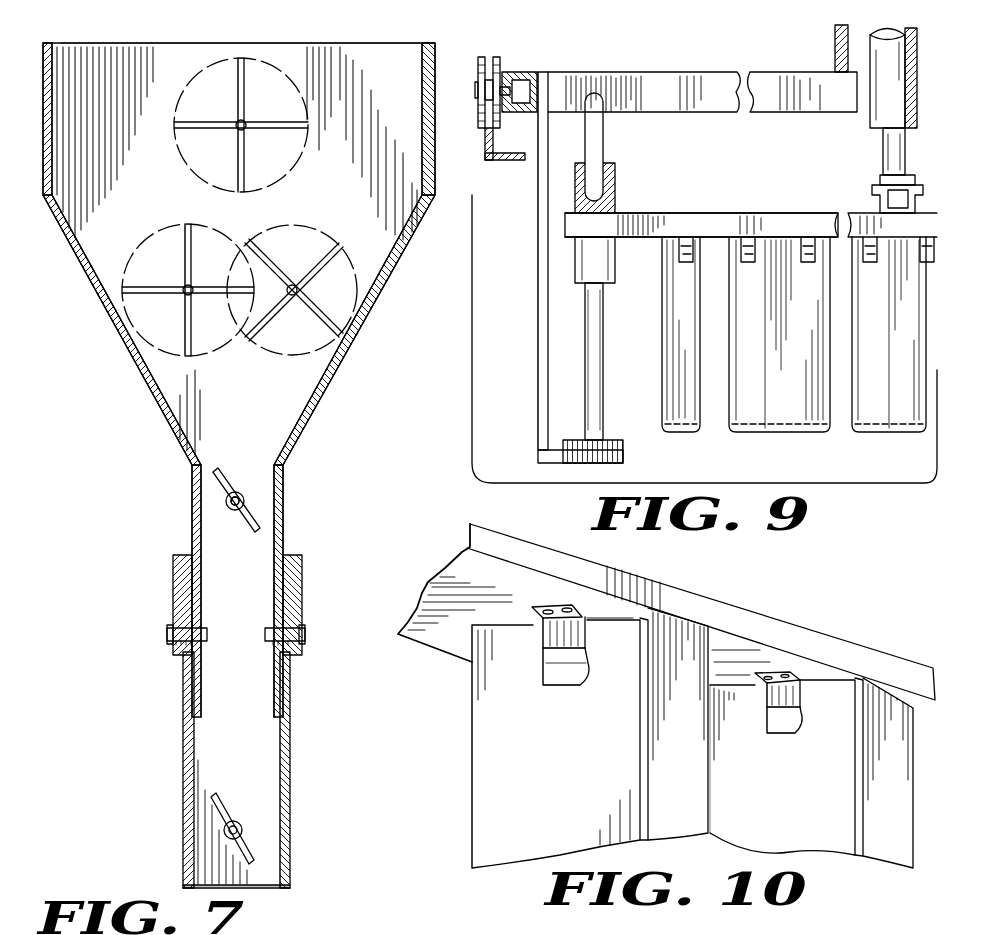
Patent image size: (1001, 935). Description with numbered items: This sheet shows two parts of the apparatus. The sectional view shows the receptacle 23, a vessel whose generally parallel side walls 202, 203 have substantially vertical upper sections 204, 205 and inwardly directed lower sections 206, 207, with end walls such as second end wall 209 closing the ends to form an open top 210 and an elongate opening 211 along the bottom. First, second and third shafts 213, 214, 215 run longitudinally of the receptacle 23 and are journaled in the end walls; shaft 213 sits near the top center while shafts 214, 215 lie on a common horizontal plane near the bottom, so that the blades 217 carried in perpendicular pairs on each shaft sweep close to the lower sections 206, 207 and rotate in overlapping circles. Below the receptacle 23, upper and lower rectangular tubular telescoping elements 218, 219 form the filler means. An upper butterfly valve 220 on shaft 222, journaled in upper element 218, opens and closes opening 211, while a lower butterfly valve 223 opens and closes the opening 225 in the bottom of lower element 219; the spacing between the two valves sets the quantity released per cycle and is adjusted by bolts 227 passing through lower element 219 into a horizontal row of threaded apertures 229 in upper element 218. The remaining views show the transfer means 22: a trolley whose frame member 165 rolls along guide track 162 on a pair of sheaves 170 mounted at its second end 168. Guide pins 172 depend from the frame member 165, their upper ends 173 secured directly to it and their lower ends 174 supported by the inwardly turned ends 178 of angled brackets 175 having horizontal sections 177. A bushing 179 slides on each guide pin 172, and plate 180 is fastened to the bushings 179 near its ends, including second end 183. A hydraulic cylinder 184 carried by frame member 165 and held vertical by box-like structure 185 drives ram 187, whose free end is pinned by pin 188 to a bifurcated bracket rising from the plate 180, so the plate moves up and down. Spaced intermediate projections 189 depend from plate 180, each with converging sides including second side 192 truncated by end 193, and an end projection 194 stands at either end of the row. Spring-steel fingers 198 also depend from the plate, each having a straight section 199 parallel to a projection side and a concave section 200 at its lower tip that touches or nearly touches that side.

In FIG. 7, the receptacle 23 is at (78, 316).
In FIG. 7, the side wall 202 is at (42, 180).
In FIG. 7, the side wall 203 is at (435, 95).
In FIG. 7, the upper section 204 is at (43, 95).
In FIG. 7, the upper section 205 is at (436, 185).
In FIG. 7, the lower section 206 is at (160, 403).
In FIG. 7, the lower section 207 is at (312, 412).
In FIG. 7, the second end wall 209 is at (140, 58).
In FIG. 7, the open top 210 is at (290, 57).
In FIG. 7, the elongate opening 211 is at (240, 470).
In FIG. 7, the first shaft 213 is at (241, 125).
In FIG. 7, the second shaft 214 is at (292, 285).
In FIG. 7, the third shaft 215 is at (184, 288).
In FIG. 7, the blades 217 is at (263, 232).
In FIG. 7, the upper tubular telescoping element 218 is at (192, 492).
In FIG. 7, the lower tubular telescoping element 219 is at (183, 780).
In FIG. 7, the upper butterfly valve 220 is at (256, 533).
In FIG. 7, the shaft 222 is at (230, 507).
In FIG. 7, the lower butterfly valve 223 is at (280, 752).
In FIG. 7, the opening 225 is at (265, 888).
In FIG. 7, the bolts 227 is at (168, 632).
In FIG. 7, the threaded apertures 229 is at (240, 820).
In FIG. 9, the conveyor assembly 22 is at (762, 68).
In FIG. 9, the guide track 162 is at (510, 162).
In FIG. 9, the frame member 165 is at (668, 72).
In FIG. 9, the second end 168 is at (517, 72).
In FIG. 9, the second pair of sheaves 170 is at (490, 57).
In FIG. 9, the guide pins 172 is at (603, 332).
In FIG. 9, the upper end 173 is at (605, 128).
In FIG. 9, the lower end 174 is at (603, 438).
In FIG. 9, the angled brackets 175 is at (472, 320).
In FIG. 9, the horizontal section 177 is at (538, 255).
In FIG. 9, the inwardly turned lower end 178 is at (545, 462).
In FIG. 9, the bushing 179 is at (612, 185).
In FIG. 9, the plate 180 is at (780, 213).
In FIG. 10, the plate 180 is at (666, 612).
In FIG. 9, the second end 183 is at (565, 226).
In FIG. 9, the hydraulic cylinder 184 is at (870, 105).
In FIG. 9, the box-like structure 185 is at (835, 48).
In FIG. 9, the ram 187 is at (872, 205).
In FIG. 9, the pin 188 is at (883, 160).
In FIG. 9, the projections 189 is at (806, 432).
In FIG. 10, the projections 189 is at (472, 812).
In FIG. 9, the end projection 194 is at (697, 432).
In FIG. 9, the fingers 198 is at (742, 237).
In FIG. 10, the fingers 198 is at (558, 700).
In FIG. 10, the second side 192 is at (480, 710).
In FIG. 10, the end 193 is at (692, 787).
In FIG. 10, the straight section 199 is at (543, 635).
In FIG. 10, the concave section 200 is at (545, 660).